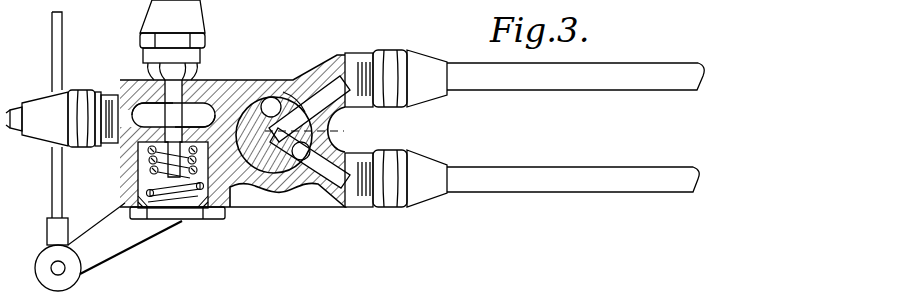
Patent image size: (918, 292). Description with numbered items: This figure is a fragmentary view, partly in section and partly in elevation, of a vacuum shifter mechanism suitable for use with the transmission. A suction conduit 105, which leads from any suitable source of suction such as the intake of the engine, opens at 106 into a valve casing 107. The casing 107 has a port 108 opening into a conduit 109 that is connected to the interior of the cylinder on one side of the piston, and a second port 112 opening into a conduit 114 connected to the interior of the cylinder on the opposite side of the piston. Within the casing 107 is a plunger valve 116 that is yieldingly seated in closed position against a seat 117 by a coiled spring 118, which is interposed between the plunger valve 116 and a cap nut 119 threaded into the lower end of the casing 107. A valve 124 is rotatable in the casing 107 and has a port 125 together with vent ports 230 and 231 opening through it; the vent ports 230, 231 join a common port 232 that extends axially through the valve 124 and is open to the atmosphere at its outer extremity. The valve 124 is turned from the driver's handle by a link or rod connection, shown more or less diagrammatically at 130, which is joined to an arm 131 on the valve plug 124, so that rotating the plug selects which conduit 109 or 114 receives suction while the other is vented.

The suction conduit 105 is at (16, 108).
The opening 106 is at (127, 150).
The valve casing 107 is at (133, 81).
The port 108 is at (328, 98).
The conduit 109 is at (578, 82).
The second port 112 is at (320, 168).
The conduit 114 is at (563, 178).
The plunger valve 116 is at (152, 116).
The seat 117 is at (195, 120).
The coiled spring 118 is at (148, 178).
The cap nut 119 is at (187, 214).
The valve 124 is at (293, 85).
The port 125 is at (265, 145).
The link or rod connection 130 is at (58, 38).
The arm 131 is at (97, 258).
The vent port 230 is at (263, 98).
The vent port 231 is at (312, 153).
The common port 232 is at (321, 126).